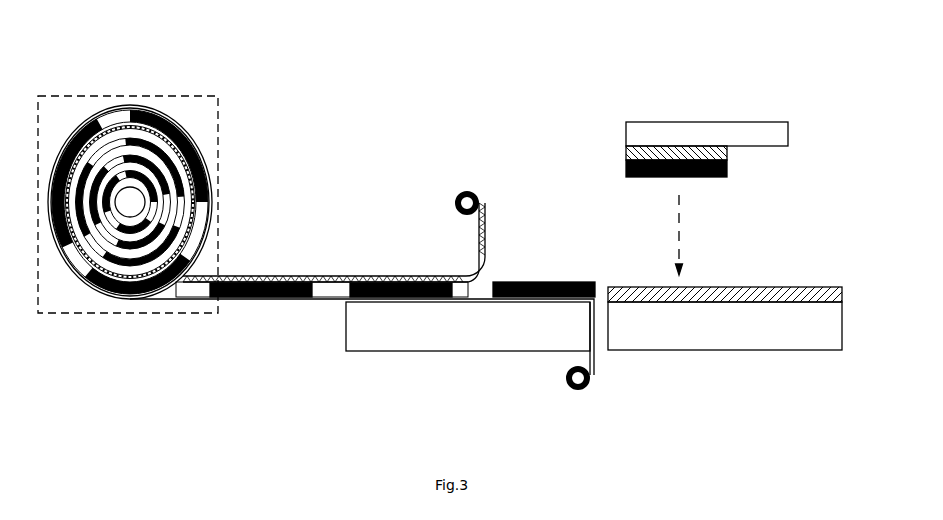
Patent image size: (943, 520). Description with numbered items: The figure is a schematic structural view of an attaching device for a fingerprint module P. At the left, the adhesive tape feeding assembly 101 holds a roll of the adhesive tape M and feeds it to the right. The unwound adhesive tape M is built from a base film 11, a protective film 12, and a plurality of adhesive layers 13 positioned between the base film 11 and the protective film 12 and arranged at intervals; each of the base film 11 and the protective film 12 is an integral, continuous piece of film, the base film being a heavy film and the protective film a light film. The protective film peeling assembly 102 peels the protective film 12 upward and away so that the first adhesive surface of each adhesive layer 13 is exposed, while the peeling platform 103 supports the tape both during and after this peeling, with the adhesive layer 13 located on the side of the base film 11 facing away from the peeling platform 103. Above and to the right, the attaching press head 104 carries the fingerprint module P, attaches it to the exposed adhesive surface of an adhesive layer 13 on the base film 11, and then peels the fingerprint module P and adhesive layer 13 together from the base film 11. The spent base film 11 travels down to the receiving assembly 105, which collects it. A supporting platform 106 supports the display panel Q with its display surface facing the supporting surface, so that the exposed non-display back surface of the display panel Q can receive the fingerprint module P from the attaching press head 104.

The adhesive tape M is at (137, 96).
The adhesive tape feeding assembly 101 is at (129, 213).
The base film 11 is at (260, 302).
The protective film 12 is at (472, 262).
The adhesive layers 13 is at (520, 280).
The peeling platform 103 is at (346, 338).
The protective film peeling assembly 102 is at (465, 185).
The receiving assembly 105 is at (572, 392).
The attaching press head 104 is at (690, 121).
The fingerprint module P is at (626, 148).
The display panel Q is at (742, 285).
The supporting platform 106 is at (700, 353).